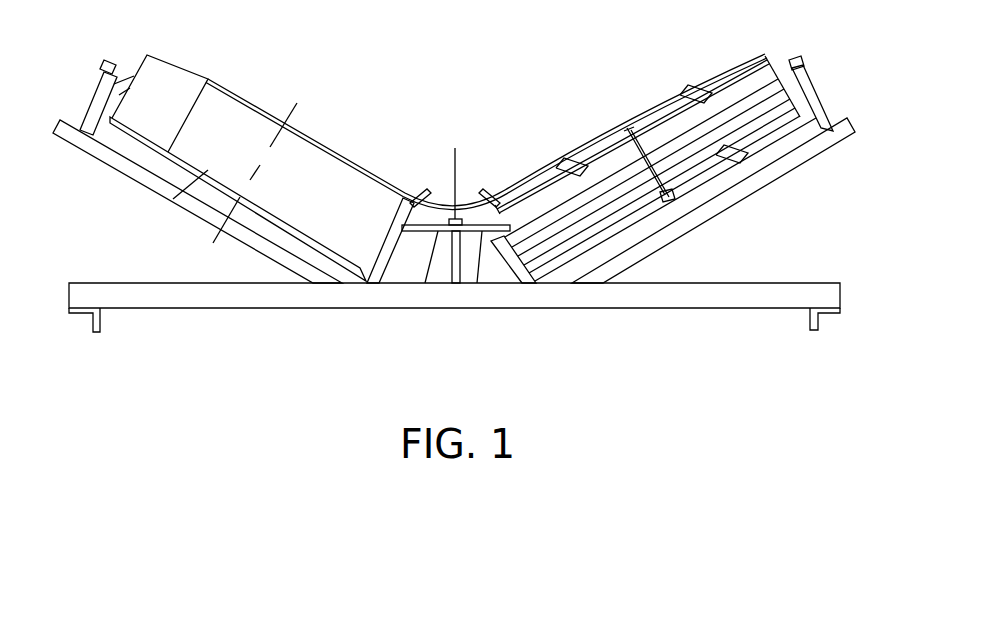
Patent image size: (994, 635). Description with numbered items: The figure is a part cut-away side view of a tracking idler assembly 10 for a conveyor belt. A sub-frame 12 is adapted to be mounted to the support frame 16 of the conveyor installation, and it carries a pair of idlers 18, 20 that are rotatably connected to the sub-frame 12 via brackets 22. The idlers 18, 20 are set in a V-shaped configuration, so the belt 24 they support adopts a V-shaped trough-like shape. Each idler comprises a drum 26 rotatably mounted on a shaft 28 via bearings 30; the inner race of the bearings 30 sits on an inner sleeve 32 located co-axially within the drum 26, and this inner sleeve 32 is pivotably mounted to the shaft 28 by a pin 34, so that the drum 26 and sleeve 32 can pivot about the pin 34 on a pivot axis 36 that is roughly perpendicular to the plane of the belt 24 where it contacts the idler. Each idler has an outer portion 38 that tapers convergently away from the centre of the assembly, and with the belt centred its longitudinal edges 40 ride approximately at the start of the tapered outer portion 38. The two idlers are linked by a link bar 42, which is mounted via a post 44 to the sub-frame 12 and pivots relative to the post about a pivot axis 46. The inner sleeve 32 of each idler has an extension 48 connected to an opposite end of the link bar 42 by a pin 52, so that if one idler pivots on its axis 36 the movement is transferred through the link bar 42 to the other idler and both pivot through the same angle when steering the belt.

The tracking idler assembly 10 is at (360, 317).
The sub-frame 12 is at (454, 313).
The support frame 16 is at (454, 333).
The idler 18 is at (463, 168).
The idler 20 is at (197, 201).
The brackets 22 is at (473, 206).
The belt 24 is at (486, 132).
The drum 26 is at (632, 137).
The shaft 28 is at (694, 230).
The bearings 30 is at (647, 112).
The inner sleeve 32 is at (586, 104).
The pin 34 is at (749, 202).
The pivot axes 36 is at (293, 105).
The outer portion 38 is at (459, 49).
The longitudinal edges 40 is at (207, 80).
The link bar 42 is at (456, 277).
The post 44 is at (452, 292).
The pivot axis 46 is at (473, 160).
The extension 48 is at (455, 179).
The pin 52 is at (504, 287).